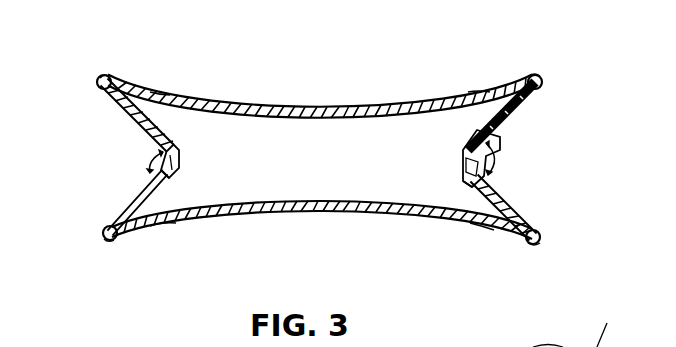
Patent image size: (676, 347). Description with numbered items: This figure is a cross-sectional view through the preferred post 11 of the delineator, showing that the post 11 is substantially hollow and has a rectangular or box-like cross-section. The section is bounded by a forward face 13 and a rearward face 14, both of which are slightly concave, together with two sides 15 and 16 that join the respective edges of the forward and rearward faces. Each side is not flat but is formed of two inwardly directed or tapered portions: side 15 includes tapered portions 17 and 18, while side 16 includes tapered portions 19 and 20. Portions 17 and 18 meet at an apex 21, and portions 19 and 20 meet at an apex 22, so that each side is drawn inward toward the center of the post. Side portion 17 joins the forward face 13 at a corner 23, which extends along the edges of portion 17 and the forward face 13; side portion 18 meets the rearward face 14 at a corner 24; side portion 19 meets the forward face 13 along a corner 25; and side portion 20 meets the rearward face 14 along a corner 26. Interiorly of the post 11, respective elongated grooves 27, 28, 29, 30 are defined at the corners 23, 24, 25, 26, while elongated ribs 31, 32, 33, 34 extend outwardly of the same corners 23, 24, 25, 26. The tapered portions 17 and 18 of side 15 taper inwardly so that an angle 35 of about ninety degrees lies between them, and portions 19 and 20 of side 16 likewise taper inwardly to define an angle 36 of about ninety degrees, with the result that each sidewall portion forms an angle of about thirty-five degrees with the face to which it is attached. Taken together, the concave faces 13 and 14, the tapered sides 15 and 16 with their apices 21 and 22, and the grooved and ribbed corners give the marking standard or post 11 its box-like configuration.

The post 11 is at (589, 86).
The forward face 13 is at (334, 106).
The rearward face 14 is at (337, 213).
The side 15 is at (98, 168).
The side 16 is at (530, 163).
The tapered portion 17 is at (143, 128).
The tapered portion 18 is at (132, 207).
The tapered portion 19 is at (511, 115).
The tapered portion 20 is at (512, 201).
The apex 21 is at (171, 181).
The apex 22 is at (466, 183).
The corner 23 is at (113, 93).
The corner 24 is at (101, 228).
The corner 25 is at (542, 93).
The corner 26 is at (524, 224).
The elongated groove 27 is at (160, 96).
The elongated groove 28 is at (165, 228).
The elongated groove 29 is at (476, 92).
The elongated groove 30 is at (483, 234).
The elongated rib 31 is at (100, 78).
The elongated rib 32 is at (102, 242).
The elongated rib 33 is at (543, 75).
The elongated rib 34 is at (537, 252).
The angle 35 is at (148, 170).
The angle 36 is at (500, 153).